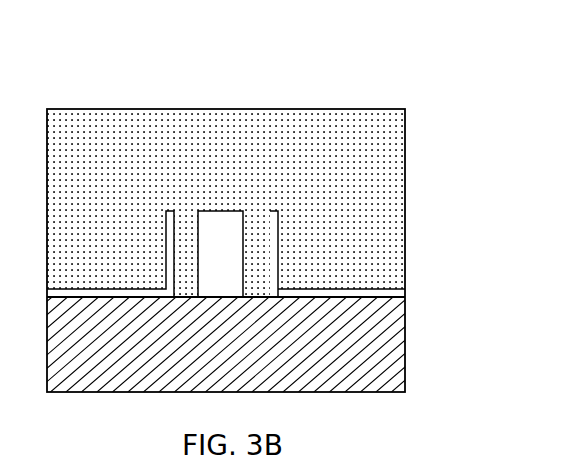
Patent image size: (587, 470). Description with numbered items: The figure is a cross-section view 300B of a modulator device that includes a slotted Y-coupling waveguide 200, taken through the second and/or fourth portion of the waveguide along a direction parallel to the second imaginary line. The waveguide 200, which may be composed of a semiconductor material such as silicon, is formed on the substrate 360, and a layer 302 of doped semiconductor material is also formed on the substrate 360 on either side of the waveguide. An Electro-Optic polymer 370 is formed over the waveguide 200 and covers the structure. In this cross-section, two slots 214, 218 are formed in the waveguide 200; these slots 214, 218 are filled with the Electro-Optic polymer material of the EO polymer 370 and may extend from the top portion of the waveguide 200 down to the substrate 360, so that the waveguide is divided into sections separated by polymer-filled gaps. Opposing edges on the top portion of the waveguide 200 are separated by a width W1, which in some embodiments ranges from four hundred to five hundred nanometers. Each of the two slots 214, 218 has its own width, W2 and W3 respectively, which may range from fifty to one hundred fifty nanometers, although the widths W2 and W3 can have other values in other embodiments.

The cross-section view 300B is at (266, 203).
The Electro-Optic polymer 370 is at (147, 167).
The substrate 360 is at (237, 356).
The layer of doped semiconductor material 302 is at (83, 289).
The slotted Y-coupling waveguide 200 is at (276, 183).
The slot 214 is at (187, 232).
The slot 218 is at (258, 225).
The width W1 is at (270, 210).
The width W2 is at (192, 280).
The width W3 is at (264, 280).